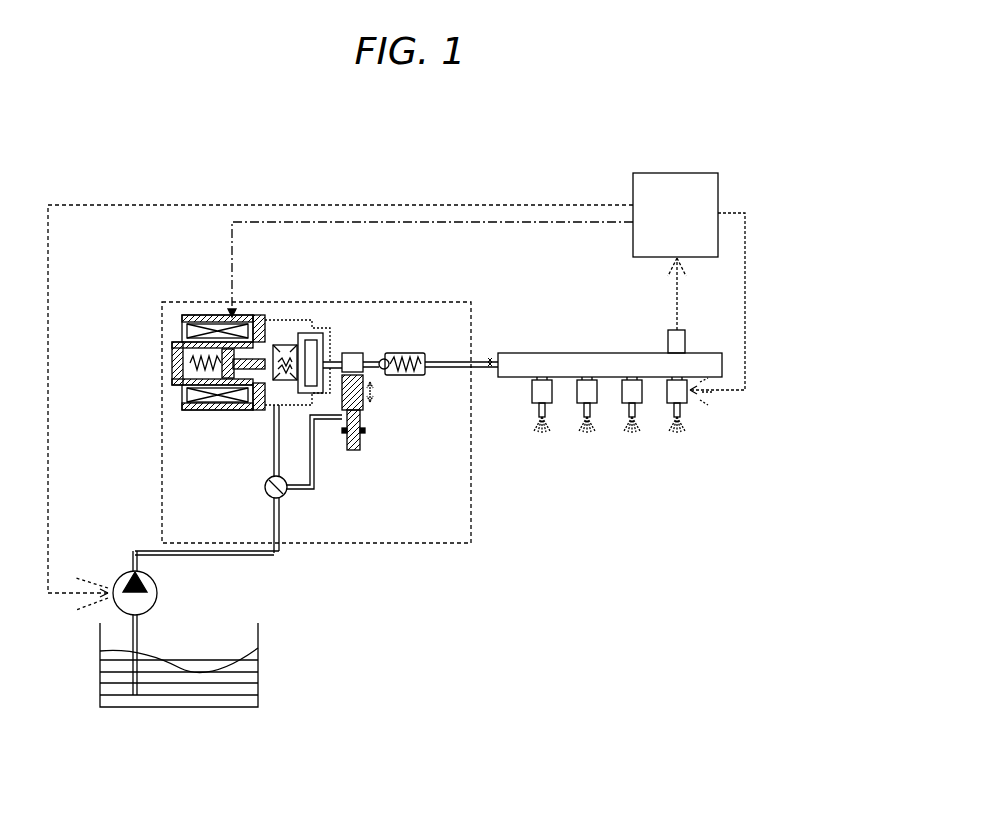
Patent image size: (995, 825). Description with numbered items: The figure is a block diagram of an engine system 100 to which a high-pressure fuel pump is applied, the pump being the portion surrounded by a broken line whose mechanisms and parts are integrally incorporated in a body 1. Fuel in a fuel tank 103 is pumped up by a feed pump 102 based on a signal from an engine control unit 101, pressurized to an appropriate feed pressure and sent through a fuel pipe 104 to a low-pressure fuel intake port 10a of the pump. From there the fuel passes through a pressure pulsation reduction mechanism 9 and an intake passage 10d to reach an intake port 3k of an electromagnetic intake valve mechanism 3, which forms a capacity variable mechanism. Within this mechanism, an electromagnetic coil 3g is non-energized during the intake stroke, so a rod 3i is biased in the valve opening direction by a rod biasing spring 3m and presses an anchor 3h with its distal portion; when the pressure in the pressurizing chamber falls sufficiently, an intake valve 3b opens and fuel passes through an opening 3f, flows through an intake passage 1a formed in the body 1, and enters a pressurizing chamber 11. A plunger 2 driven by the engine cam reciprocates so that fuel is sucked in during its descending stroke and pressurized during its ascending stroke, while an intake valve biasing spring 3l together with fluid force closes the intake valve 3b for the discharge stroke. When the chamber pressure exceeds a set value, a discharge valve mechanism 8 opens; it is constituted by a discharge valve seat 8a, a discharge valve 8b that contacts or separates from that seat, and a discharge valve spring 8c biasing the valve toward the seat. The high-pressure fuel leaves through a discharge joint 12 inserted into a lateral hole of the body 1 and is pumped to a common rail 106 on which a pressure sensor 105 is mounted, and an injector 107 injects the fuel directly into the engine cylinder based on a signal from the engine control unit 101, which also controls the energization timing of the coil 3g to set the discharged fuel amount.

The fuel supply system 100 is at (155, 280).
The body 1 is at (410, 307).
The intake passage 1a is at (338, 357).
The plunger 2 is at (347, 455).
The electromagnetic intake valve mechanism 3 is at (215, 338).
The intake valve 3b is at (299, 348).
The opening 3f is at (291, 338).
The electromagnetic coil 3g is at (190, 315).
The anchor 3h is at (186, 348).
The rod 3i is at (185, 410).
The intake port 3k is at (265, 400).
The intake valve biasing spring 3l is at (283, 352).
The rod biasing spring 3m is at (184, 378).
The discharge valve mechanism 8 is at (411, 422).
The discharge valve seat 8a is at (383, 369).
The discharge valve 8b is at (392, 374).
The discharge valve spring 8c is at (412, 375).
The pressure pulsation reduction mechanism 9 is at (286, 495).
The low-pressure fuel intake port 10a is at (278, 554).
The intake passage 10d is at (270, 412).
The pressurizing chamber 11 is at (351, 353).
The discharge joint 12 is at (472, 345).
The engine control unit 101 is at (648, 183).
The feed pump 102 is at (117, 602).
The fuel tank 103 is at (250, 667).
The fuel pipe 104 is at (208, 556).
The pressure sensor 105 is at (674, 345).
The common rail 106 is at (557, 363).
The injector 107 is at (688, 398).